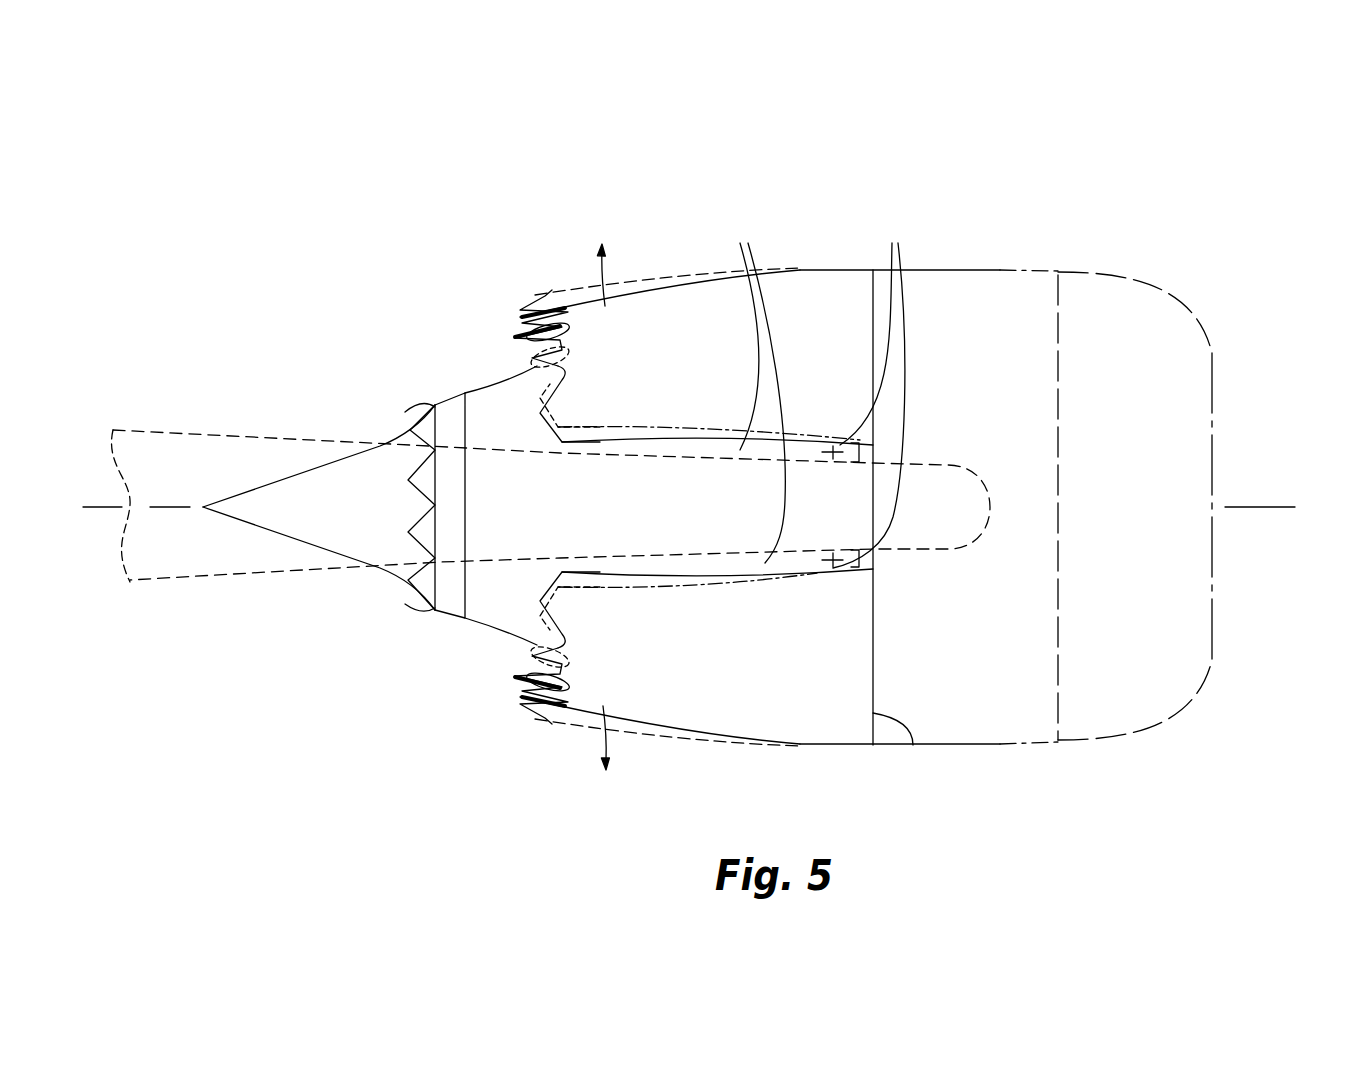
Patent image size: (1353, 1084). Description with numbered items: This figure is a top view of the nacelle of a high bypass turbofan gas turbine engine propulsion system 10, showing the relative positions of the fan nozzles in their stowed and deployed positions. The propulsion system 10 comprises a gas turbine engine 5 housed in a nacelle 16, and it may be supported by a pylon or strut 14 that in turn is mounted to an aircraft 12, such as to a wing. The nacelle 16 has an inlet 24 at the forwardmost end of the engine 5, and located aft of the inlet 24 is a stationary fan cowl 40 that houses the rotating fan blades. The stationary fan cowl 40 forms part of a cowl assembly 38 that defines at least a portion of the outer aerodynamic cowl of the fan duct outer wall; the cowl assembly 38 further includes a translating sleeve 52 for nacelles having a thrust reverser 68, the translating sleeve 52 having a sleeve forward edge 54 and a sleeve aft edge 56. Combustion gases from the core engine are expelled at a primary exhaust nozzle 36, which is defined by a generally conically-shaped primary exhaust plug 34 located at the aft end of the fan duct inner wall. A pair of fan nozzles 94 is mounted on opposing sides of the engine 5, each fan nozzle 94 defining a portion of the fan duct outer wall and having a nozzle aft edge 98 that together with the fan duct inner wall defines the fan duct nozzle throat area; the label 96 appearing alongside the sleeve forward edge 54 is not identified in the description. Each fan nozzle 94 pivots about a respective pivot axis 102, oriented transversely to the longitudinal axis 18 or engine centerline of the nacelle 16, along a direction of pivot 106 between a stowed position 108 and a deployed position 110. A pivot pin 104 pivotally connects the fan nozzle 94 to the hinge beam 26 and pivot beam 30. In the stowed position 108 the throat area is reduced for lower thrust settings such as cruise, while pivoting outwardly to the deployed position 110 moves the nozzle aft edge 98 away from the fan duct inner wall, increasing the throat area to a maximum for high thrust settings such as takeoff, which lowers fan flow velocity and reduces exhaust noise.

The gas turbine engine 5 is at (789, 178).
The gas turbine engine propulsion system 10 is at (551, 441).
The aircraft 12 is at (192, 392).
The pylon or strut 14 is at (149, 476).
The nacelle 16 is at (1100, 277).
The longitudinal axis 18 is at (1252, 505).
The inlet 24 is at (1212, 660).
The hinge beam 26 is at (749, 389).
The pivot beam 30 is at (749, 389).
The primary exhaust plug 34 is at (277, 480).
The primary exhaust nozzle 36 is at (410, 580).
The cowl assembly 38 is at (810, 268).
The stationary fan cowl 40 is at (975, 745).
The translating sleeve 52 is at (640, 280).
The sleeve forward edge 54 is at (913, 745).
The sleeve aft edge 56 is at (533, 413).
The thrust reverser 68 is at (660, 500).
The fan nozzle 94 is at (660, 500).
The fan frame splitter lip 96 is at (906, 758).
The nozzle aft edge 98 is at (512, 500).
The pivot axis 102 is at (886, 391).
The pivot pin 104 is at (886, 391).
The direction of pivot 106 is at (600, 268).
The stowed position 108 is at (549, 297).
The deployed position 110 is at (553, 292).